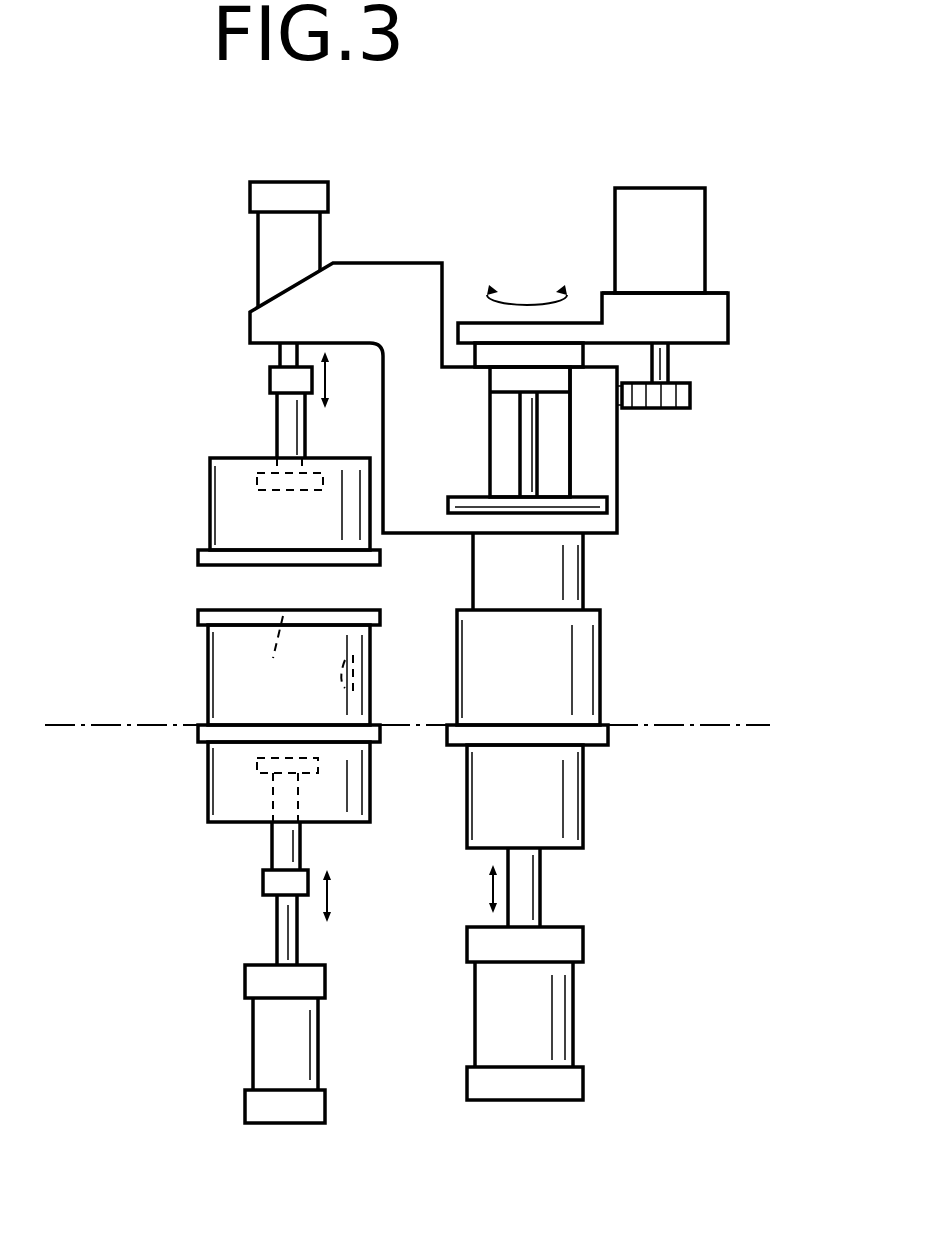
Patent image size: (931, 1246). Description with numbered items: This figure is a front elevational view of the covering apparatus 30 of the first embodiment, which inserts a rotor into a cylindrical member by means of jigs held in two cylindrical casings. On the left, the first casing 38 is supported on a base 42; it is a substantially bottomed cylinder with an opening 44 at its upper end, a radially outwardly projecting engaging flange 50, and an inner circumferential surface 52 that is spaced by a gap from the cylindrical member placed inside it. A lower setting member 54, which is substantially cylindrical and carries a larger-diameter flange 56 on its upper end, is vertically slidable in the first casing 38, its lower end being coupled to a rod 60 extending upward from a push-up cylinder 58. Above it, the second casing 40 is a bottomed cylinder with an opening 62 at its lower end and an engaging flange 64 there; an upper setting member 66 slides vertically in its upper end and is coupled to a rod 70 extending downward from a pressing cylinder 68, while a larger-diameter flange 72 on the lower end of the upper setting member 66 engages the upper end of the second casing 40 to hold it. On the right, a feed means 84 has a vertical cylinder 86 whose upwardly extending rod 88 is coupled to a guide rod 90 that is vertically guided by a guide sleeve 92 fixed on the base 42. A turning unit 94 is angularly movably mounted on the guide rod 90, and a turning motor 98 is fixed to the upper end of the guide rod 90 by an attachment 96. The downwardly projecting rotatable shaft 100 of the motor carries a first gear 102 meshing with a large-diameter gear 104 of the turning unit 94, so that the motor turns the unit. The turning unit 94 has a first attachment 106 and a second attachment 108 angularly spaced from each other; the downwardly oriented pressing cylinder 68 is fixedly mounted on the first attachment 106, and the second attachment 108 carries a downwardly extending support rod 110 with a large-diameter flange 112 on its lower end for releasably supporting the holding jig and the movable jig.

The covering apparatus 30 is at (583, 92).
The first casing 38 is at (196, 683).
The second casing 40 is at (204, 500).
The base 42 is at (716, 724).
The opening 44 is at (250, 693).
The engaging flange 50 is at (198, 617).
The inner circumferential surface 52 is at (363, 685).
The lower setting member 54 is at (272, 838).
The larger-diameter flange 56 is at (257, 765).
The push-up cylinder 58 is at (273, 1035).
The rod 60 is at (277, 930).
The opening 62 is at (248, 542).
The engaging flange 64 is at (372, 564).
The upper setting member 66 is at (278, 417).
The pressing cylinder 68 is at (303, 232).
The rod 70 is at (277, 355).
The larger-diameter flange 72 is at (299, 492).
The feed means 84 is at (740, 326).
The vertical cylinder 86 is at (535, 1015).
The rod 88 is at (523, 887).
The guide rod 90 is at (552, 580).
The guide sleeve 92 is at (557, 682).
The turning unit 94 is at (456, 292).
The attachment 96 is at (668, 302).
The turning motor 98 is at (672, 200).
The rotatable shaft 100 is at (672, 358).
The first gear 102 is at (690, 396).
The large-diameter gear 104 is at (627, 415).
The first attachment 106 is at (387, 278).
The second attachment 108 is at (560, 430).
The support rod 110 is at (527, 410).
The large-diameter flange 112 is at (575, 505).